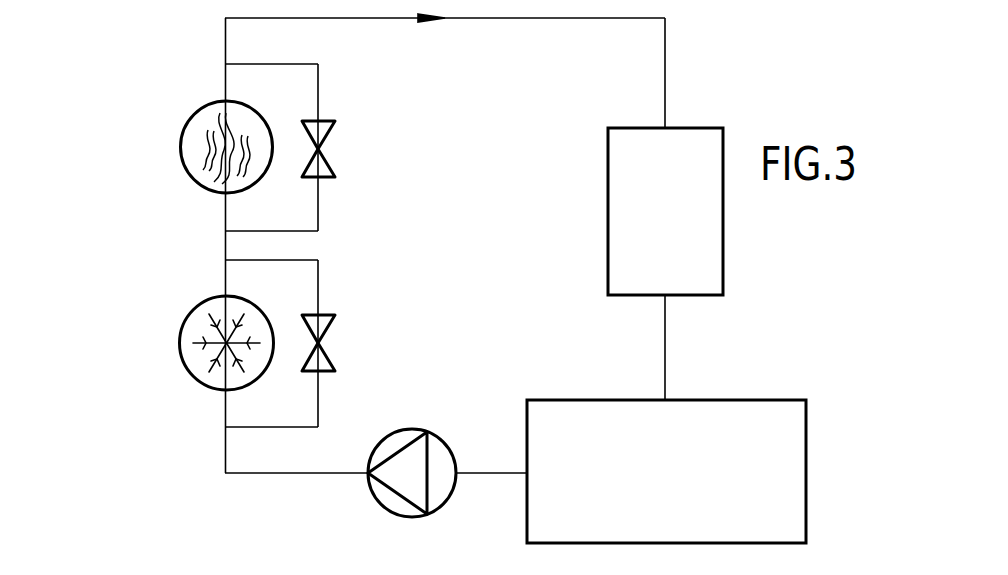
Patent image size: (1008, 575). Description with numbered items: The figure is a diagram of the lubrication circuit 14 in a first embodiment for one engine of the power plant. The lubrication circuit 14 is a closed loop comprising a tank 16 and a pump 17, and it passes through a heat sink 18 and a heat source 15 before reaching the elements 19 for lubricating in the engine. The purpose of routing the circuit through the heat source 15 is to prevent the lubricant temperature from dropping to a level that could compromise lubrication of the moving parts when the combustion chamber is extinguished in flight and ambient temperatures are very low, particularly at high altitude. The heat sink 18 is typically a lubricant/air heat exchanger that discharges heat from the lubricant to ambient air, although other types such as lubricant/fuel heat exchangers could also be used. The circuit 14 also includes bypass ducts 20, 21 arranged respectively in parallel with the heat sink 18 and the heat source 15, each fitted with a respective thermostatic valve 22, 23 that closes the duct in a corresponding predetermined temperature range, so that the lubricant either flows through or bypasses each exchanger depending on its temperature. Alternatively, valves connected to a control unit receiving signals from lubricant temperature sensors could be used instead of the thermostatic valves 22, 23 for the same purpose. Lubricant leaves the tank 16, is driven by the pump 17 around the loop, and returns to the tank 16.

The lubrication circuit 14 is at (832, 311).
The heat source 15 is at (180, 146).
The tank 16 is at (676, 491).
The pump 17 is at (408, 429).
The heat sink 18 is at (180, 343).
The elements for lubricating 19 is at (676, 222).
The bypass duct 20 is at (319, 399).
The bypass duct 21 is at (319, 203).
The thermostatic valve 22 is at (326, 342).
The thermostatic valve 23 is at (326, 148).